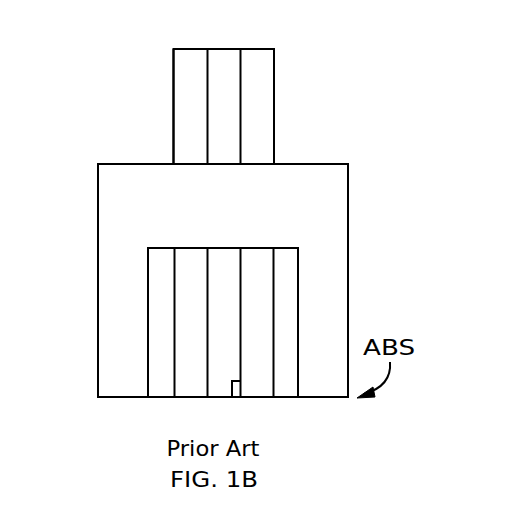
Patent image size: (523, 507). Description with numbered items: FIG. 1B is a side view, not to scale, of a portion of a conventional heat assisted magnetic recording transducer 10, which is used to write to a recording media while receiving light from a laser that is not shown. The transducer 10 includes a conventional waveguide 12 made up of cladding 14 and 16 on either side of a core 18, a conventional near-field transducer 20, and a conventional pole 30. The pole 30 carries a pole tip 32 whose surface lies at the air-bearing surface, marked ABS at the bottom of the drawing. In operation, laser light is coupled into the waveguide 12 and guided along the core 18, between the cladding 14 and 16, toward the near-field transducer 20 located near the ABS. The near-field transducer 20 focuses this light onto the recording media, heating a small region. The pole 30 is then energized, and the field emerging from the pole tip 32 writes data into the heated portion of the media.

The HAMR transducer 10 is at (224, 82).
The waveguide 12 is at (296, 147).
The cladding 14 is at (272, 148).
The cladding 16 is at (173, 157).
The core 18 is at (242, 108).
The near-field transducer 20 is at (237, 398).
The pole 30 is at (98, 348).
The pole tip 32 is at (128, 406).